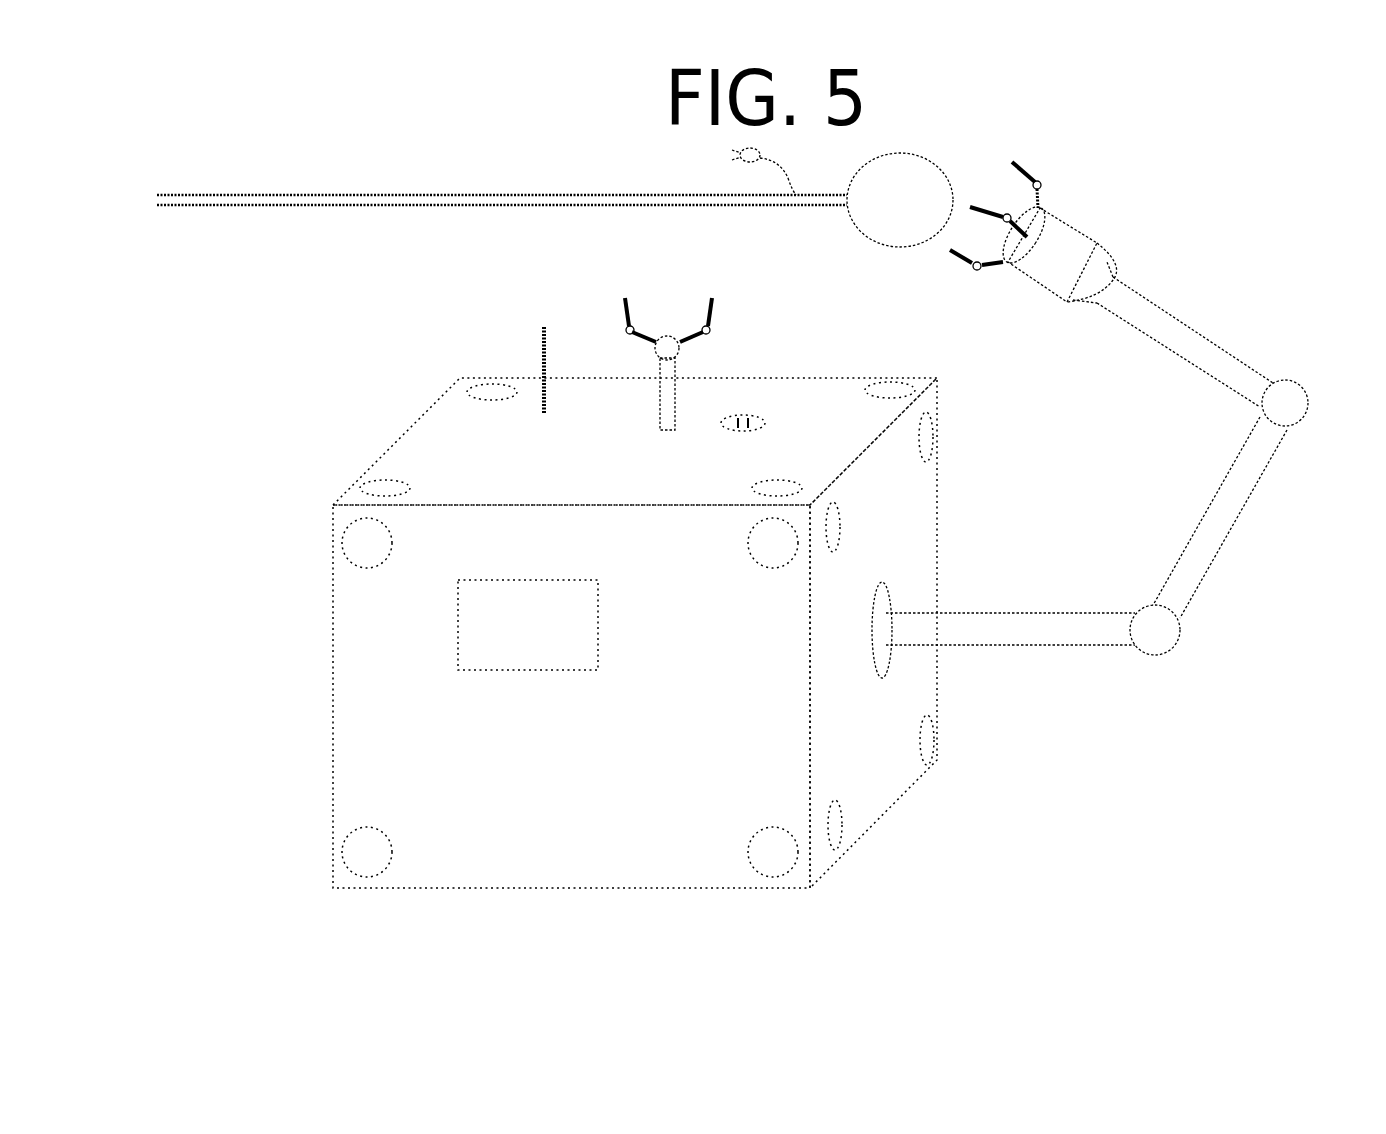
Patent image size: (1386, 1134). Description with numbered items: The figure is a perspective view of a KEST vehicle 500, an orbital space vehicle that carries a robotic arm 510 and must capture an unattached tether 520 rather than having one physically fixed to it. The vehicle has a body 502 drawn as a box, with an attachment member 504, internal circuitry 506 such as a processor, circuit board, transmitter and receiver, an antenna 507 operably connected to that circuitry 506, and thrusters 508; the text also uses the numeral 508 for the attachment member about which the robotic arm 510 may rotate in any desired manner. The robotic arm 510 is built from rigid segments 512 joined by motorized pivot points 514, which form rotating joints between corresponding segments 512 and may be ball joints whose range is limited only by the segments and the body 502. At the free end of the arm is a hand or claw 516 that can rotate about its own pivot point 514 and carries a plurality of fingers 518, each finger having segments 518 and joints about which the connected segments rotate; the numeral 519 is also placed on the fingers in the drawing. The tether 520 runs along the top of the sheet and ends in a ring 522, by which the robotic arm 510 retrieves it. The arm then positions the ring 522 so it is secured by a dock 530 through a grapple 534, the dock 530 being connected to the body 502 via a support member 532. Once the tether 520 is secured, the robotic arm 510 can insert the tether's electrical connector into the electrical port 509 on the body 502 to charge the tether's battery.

The KEST vehicle 500 is at (306, 379).
The body 502 is at (395, 733).
The attachment member 504 is at (889, 381).
The internal circuitry 506 is at (535, 672).
The antenna 507 is at (543, 360).
The thrusters 508 is at (890, 597).
The electrical port 509 is at (737, 432).
The robotic arm 510 is at (1266, 257).
The rigid segments 512 is at (1057, 650).
The motorized pivot points 514 is at (1153, 655).
The hand or claw 516 is at (1068, 227).
The fingers 518 is at (990, 268).
The gripper finger 519 is at (975, 272).
The tether 520 is at (293, 160).
The ring 522 is at (727, 157).
The dock 530 is at (680, 292).
The support member 532 is at (658, 405).
The grapple 534 is at (683, 350).